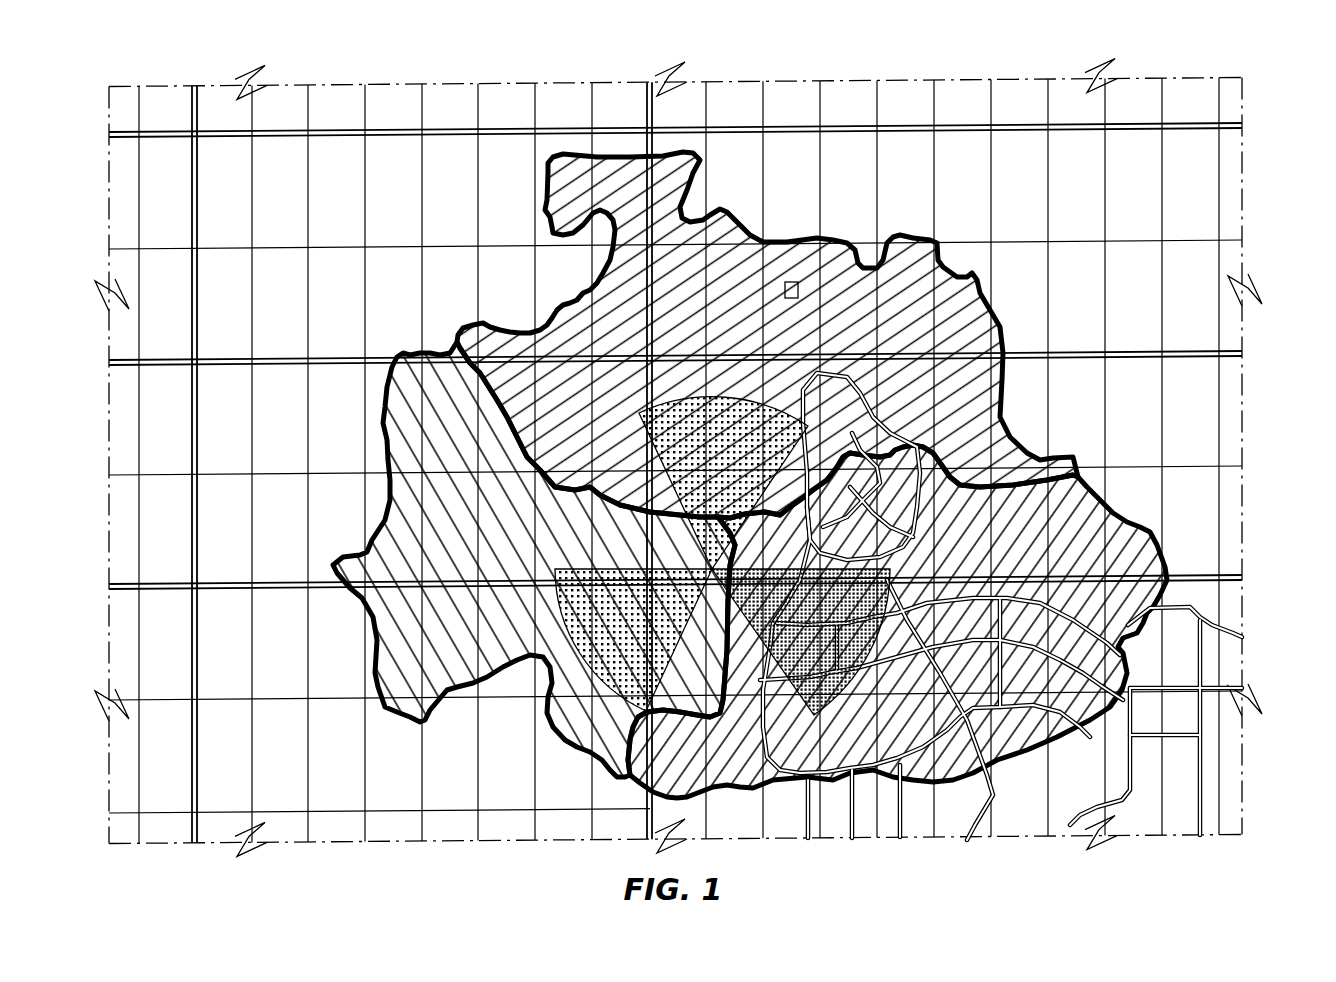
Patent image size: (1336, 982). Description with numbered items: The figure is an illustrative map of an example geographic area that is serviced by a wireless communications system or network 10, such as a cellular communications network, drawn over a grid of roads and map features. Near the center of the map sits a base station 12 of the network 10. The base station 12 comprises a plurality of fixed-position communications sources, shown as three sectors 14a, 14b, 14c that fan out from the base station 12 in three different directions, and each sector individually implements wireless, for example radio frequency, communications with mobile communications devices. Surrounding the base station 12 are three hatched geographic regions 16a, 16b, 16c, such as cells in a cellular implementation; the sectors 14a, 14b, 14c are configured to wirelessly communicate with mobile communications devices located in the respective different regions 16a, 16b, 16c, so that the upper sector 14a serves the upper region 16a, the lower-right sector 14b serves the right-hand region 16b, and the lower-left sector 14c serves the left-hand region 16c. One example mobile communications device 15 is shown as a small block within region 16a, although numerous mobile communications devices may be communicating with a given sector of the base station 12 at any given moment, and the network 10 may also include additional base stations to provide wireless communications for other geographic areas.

The wireless communications network 10 is at (1140, 210).
The base station 12 is at (698, 546).
The sector 14a is at (716, 510).
The sector 14b is at (812, 585).
The sector 14c is at (672, 646).
The mobile communications device 15 is at (789, 281).
The geographic region 16a is at (748, 212).
The geographic region 16b is at (1105, 725).
The geographic region 16c is at (400, 712).